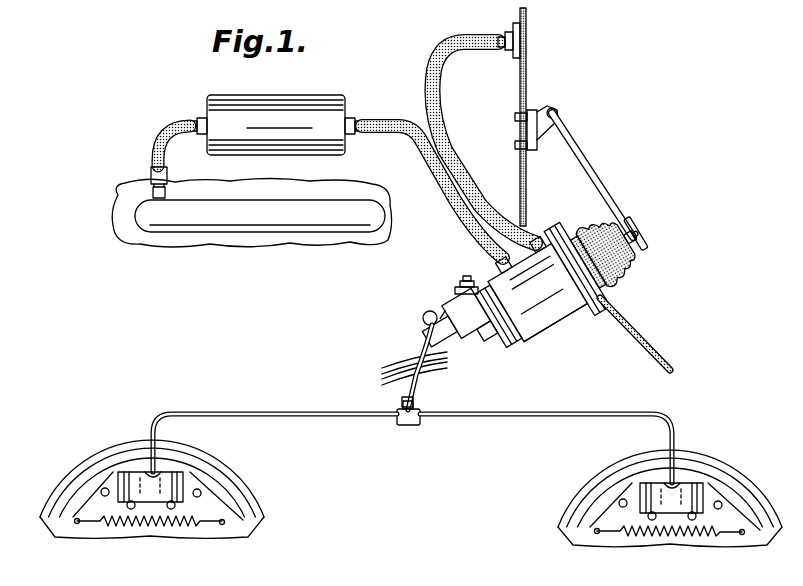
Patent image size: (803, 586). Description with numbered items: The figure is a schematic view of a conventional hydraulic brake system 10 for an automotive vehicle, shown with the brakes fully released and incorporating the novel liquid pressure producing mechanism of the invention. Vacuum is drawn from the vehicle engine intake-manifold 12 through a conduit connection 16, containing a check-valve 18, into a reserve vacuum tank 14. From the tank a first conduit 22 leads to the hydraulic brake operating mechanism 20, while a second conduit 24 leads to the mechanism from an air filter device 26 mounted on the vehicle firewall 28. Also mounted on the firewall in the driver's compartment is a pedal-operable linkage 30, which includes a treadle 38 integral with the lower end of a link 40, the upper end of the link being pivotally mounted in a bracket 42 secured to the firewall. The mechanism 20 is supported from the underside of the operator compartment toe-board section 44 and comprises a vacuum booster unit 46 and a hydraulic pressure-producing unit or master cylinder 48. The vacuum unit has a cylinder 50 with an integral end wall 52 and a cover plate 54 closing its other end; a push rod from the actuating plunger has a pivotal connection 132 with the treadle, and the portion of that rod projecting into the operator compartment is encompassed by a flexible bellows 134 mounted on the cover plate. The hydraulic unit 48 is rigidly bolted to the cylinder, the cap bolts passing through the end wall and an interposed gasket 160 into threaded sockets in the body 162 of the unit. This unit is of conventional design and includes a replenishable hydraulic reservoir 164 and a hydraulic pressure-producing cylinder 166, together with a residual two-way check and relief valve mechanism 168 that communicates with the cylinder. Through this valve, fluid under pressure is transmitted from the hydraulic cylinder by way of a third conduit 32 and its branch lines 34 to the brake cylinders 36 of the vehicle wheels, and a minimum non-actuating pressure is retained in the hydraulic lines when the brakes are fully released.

The hydraulic brake system 10 is at (630, 124).
The vehicle engine intake-manifold 12 is at (263, 223).
The reserve vacuum tank 14 is at (263, 116).
The conduit connection 16 is at (162, 133).
The check-valve 18 is at (151, 175).
The hydraulic brake operating mechanism 20 is at (571, 329).
The first conduit 22 is at (383, 119).
The second conduit 24 is at (452, 48).
The air filter device 26 is at (512, 27).
The vehicle firewall 28 is at (527, 83).
The pedal-operable linkage 30 is at (614, 193).
The third conduit 32 is at (418, 387).
The branch lines 34 is at (283, 409).
The brake cylinders 36 is at (137, 471).
The treadle 38 is at (650, 237).
The link 40 is at (593, 180).
The bracket 42 is at (541, 128).
The toe-board section 44 is at (648, 343).
The vacuum booster unit 46 is at (546, 341).
The hydraulic pressure-producing unit 48 is at (443, 298).
The cylinder 50 is at (557, 331).
The end wall 52 is at (498, 303).
The cover plate 54 is at (575, 246).
The pivotal connection 132 is at (634, 244).
The flexible bellows 134 is at (618, 264).
The gasket 160 is at (511, 323).
The body 162 is at (500, 347).
The hydraulic reservoir 164 is at (467, 276).
The hydraulic pressure-producing cylinder 166 is at (468, 347).
The residual two-way check and relief valve mechanism 168 is at (437, 305).